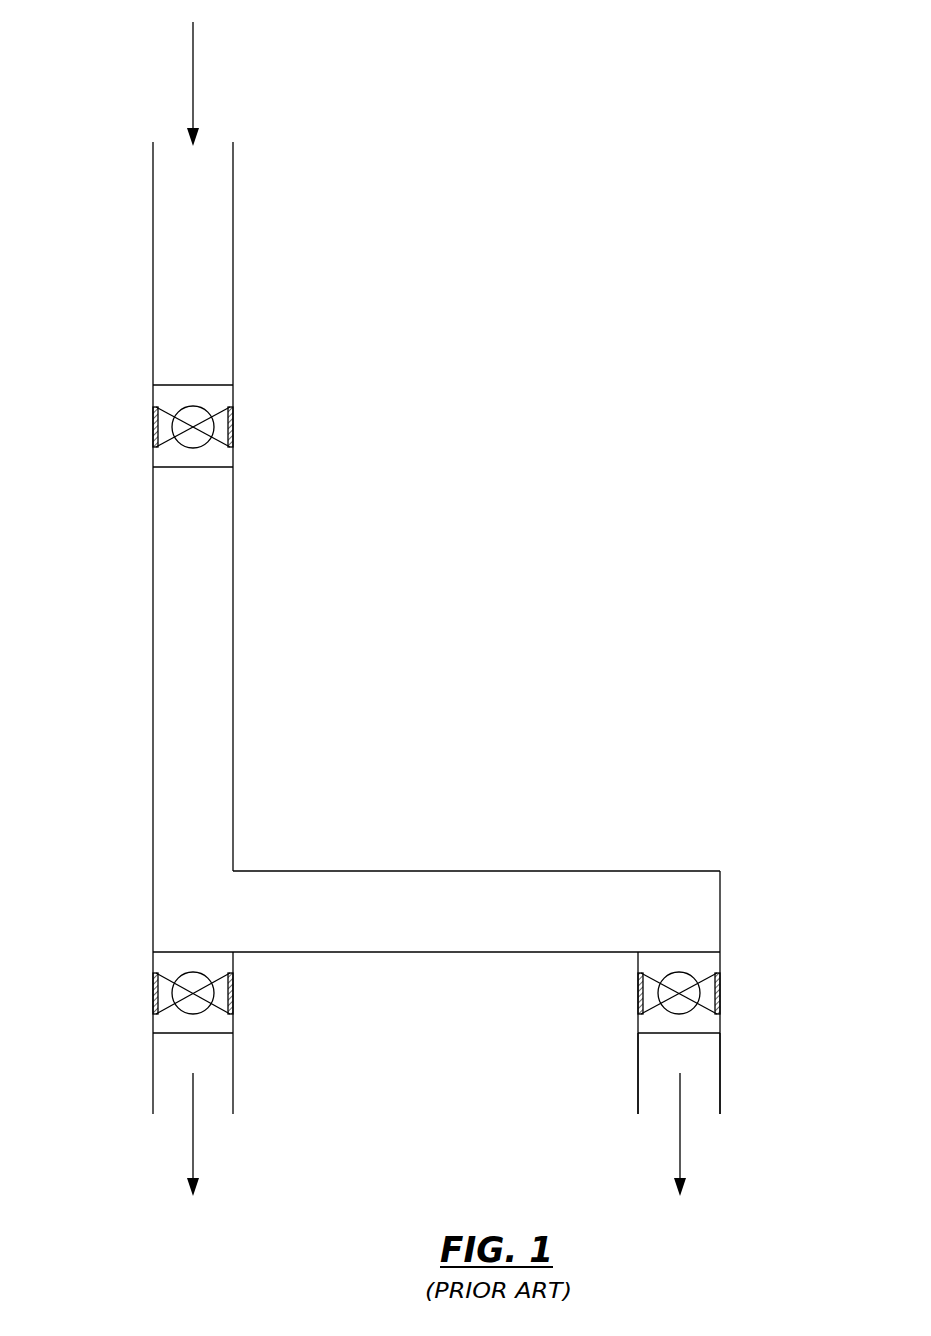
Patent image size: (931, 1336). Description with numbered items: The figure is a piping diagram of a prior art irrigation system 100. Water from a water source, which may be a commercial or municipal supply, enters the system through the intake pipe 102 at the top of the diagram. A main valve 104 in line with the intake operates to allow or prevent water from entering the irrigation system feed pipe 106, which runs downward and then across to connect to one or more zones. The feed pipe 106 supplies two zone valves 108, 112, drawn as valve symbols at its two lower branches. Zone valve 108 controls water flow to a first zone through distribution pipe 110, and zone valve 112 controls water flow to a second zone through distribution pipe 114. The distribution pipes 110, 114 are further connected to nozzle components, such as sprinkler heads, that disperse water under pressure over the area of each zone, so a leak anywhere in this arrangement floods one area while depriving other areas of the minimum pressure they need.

The prior art irrigation system 100 is at (588, 55).
The intake pipe 102 is at (233, 193).
The main valve 104 is at (233, 427).
The feed pipe 106 is at (153, 629).
The zone valve 108 is at (153, 993).
The distribution pipe 110 is at (153, 1073).
The zone valve 112 is at (720, 993).
The distribution pipe 114 is at (720, 1073).